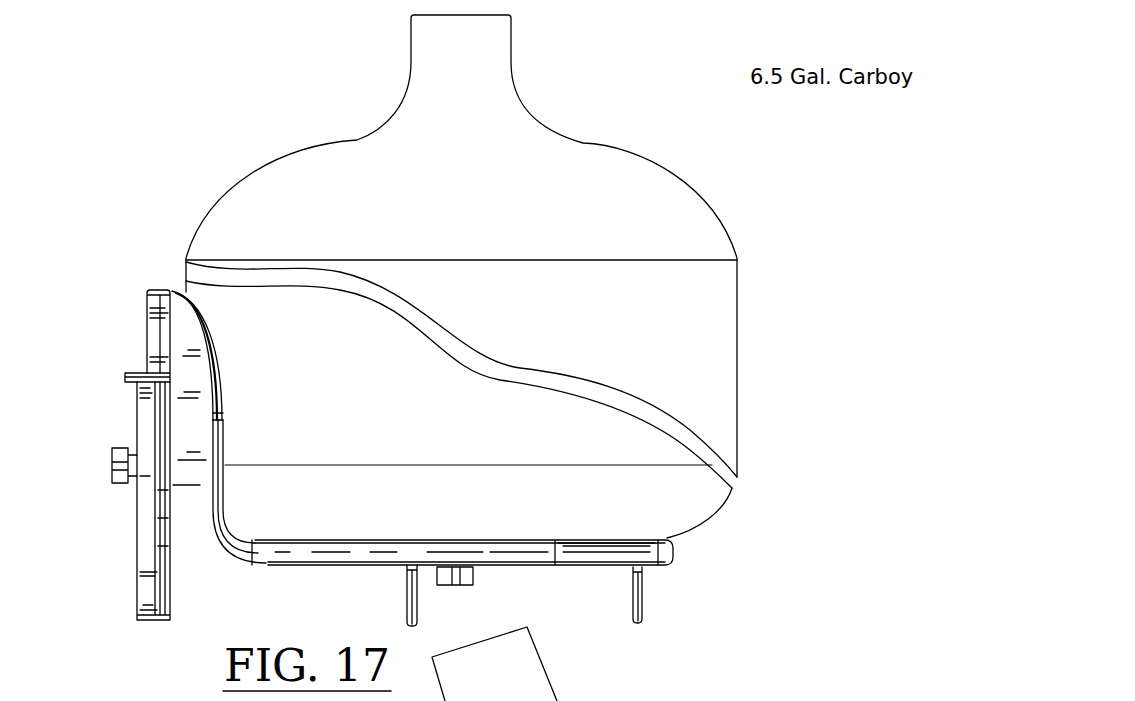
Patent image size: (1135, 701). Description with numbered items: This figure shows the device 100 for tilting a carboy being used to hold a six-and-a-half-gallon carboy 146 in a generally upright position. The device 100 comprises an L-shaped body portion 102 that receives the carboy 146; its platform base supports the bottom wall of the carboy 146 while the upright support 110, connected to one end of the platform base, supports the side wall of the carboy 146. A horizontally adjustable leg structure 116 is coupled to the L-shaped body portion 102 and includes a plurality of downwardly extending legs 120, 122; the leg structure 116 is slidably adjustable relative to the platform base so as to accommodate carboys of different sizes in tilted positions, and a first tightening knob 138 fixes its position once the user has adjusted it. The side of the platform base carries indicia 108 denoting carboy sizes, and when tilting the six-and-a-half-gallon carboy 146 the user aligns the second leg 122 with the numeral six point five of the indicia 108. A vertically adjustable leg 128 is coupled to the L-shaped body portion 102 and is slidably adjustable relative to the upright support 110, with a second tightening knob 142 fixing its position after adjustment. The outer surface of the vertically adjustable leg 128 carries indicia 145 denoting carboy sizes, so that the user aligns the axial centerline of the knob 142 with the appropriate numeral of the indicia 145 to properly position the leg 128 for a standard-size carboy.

The device for tilting a carboy 100 is at (223, 607).
The L-shaped body portion 102 is at (187, 432).
The indicia 108 is at (310, 533).
The upright support 110 is at (180, 340).
The horizontally adjustable leg structure 116 is at (602, 570).
The leg 120 is at (633, 597).
The second leg 122 is at (412, 590).
The vertically adjustable leg 128 is at (135, 408).
The first tightening knob 138 is at (463, 578).
The second tightening knob 142 is at (127, 453).
The indicia 145 is at (178, 546).
The carboy 146 is at (663, 303).